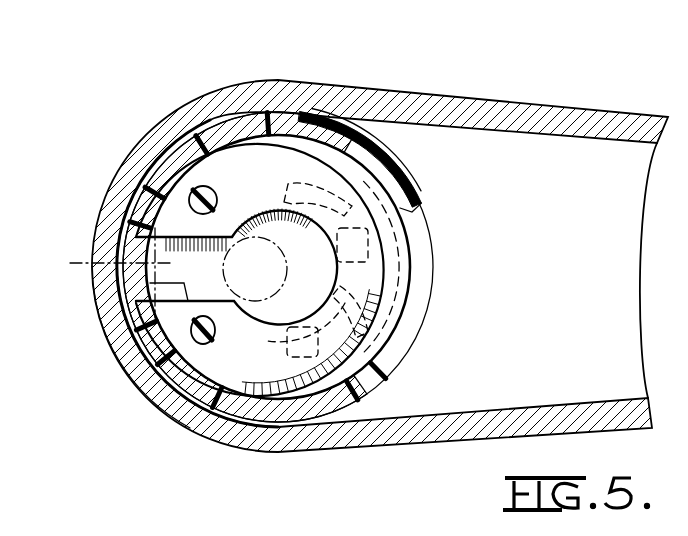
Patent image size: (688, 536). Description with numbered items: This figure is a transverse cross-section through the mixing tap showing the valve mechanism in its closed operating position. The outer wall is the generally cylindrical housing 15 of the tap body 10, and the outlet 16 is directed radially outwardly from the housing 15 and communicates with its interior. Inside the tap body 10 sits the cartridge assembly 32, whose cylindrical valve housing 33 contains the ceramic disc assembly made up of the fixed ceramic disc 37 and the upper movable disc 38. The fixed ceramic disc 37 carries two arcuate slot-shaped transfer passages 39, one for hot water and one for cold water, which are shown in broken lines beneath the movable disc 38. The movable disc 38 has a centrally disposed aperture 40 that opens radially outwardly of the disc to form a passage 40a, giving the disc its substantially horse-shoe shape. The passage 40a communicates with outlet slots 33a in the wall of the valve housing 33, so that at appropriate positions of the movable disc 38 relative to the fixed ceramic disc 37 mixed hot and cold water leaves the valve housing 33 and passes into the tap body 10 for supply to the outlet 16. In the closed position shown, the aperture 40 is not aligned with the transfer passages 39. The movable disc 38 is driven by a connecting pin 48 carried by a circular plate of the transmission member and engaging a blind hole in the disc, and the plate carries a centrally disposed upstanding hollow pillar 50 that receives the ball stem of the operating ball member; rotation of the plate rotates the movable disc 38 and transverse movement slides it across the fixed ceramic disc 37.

The tap body 10 is at (415, 86).
The outlet 16 is at (481, 116).
The housing 15 is at (122, 185).
The cartridge assembly 32 is at (128, 403).
The valve housing 33 is at (386, 376).
The outlet slots 33a is at (140, 224).
The fixed ceramic disc 37 is at (380, 291).
The movable disc 38 is at (396, 290).
The transfer passages 39 is at (402, 231).
The central aperture 40 is at (322, 232).
The passage 40a is at (136, 283).
The connecting pin 48 is at (198, 190).
The hollow pillar 50 is at (84, 263).